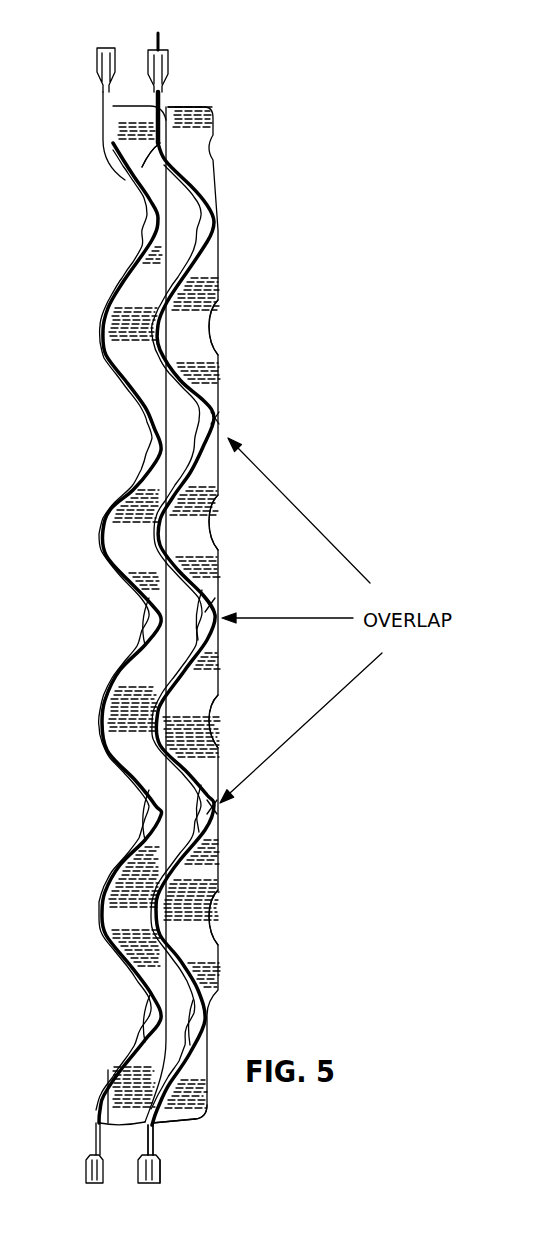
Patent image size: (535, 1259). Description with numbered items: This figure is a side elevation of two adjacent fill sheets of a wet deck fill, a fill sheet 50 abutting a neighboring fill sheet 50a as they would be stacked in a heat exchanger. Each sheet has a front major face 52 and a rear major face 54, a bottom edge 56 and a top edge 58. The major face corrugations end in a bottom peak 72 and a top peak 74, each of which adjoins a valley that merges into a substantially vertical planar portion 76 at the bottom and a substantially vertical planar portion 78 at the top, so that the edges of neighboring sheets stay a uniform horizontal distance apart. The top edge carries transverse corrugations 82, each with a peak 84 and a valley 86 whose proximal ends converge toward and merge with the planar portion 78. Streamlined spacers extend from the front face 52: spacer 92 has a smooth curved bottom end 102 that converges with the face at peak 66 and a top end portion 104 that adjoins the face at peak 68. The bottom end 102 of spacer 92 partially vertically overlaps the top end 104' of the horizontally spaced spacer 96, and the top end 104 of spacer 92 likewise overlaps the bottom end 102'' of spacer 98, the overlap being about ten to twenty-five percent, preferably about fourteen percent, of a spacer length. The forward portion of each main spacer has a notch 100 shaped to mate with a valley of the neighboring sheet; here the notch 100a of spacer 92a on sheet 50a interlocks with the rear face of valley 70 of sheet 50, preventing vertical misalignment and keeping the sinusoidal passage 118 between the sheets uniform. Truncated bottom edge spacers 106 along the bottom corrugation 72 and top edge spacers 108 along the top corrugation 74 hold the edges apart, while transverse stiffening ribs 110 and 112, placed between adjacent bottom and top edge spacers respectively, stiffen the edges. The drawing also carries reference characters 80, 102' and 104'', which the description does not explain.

The fill sheet 50 is at (148, 1182).
The fill sheet 50a is at (83, 1182).
The front major face 52 is at (184, 370).
The rear major face 54 is at (170, 393).
The bottom edge 56 is at (152, 1185).
The top edge 58 is at (167, 48).
The peak 66 is at (212, 807).
The peak 68 is at (207, 627).
The valley 70 is at (158, 712).
The bottom peak 72 is at (205, 1020).
The top peak 74 is at (210, 230).
The substantially vertical planar portion 76 is at (153, 1140).
The substantially vertical planar portion 78 is at (162, 97).
The terminal lug 80 is at (160, 1168).
The top edge transverse corrugation 82 is at (167, 25).
The peak 84 is at (168, 60).
The valley 86 is at (150, 55).
The spacer 92 is at (208, 670).
The spacer 92a is at (137, 748).
The spacer 96 is at (205, 882).
The spacer 98 is at (212, 457).
The notch 100 is at (210, 727).
The notch 100a is at (150, 703).
The bottom end 102 is at (235, 820).
The overlap region 102' is at (233, 1011).
The bottom end 102'' is at (244, 574).
The top end portion 104 is at (241, 596).
The top end 104' is at (243, 815).
The overlap point 104'' is at (256, 417).
The bottom edge spacer 106 is at (197, 1105).
The top edge spacer 108 is at (193, 125).
The transverse stiffening rib 110 is at (208, 1112).
The transverse stiffening rib 112 is at (180, 170).
The horizontal space 118 is at (183, 230).